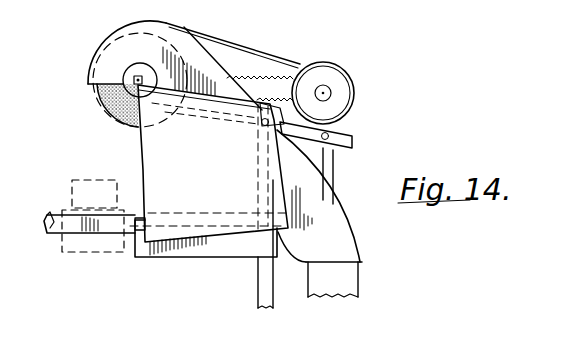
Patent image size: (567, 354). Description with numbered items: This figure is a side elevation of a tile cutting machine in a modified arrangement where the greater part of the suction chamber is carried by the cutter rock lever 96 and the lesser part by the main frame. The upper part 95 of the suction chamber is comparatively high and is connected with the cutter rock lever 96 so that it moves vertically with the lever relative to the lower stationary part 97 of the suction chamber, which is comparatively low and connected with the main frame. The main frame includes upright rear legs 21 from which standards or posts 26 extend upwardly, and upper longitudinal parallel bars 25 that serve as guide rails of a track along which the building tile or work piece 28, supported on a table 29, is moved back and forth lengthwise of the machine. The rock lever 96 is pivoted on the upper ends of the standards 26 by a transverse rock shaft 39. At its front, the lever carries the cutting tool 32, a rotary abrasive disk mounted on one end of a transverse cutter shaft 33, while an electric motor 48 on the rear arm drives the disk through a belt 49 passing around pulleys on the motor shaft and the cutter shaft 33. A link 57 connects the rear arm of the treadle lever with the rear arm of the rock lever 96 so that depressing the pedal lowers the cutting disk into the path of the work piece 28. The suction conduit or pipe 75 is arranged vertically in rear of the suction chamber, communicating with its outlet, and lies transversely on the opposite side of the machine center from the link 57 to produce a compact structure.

The rear legs 21 is at (262, 297).
The upper longitudinal parallel bars 25 is at (47, 228).
The standards or posts 26 is at (256, 184).
The building tile or work piece 28 is at (74, 180).
The table 29 is at (60, 209).
The cutting tool 32 is at (108, 105).
The cutter shaft 33 is at (136, 74).
The rock shaft 39 is at (259, 123).
The electric motor 48 is at (353, 88).
The belt 49 is at (248, 78).
The link 57 is at (333, 172).
The suction conduit or pipe 75 is at (319, 213).
The upper part of the suction chamber 95 is at (209, 163).
The cutter rock lever 96 is at (354, 142).
The lower stationary part of the suction chamber 97 is at (211, 252).